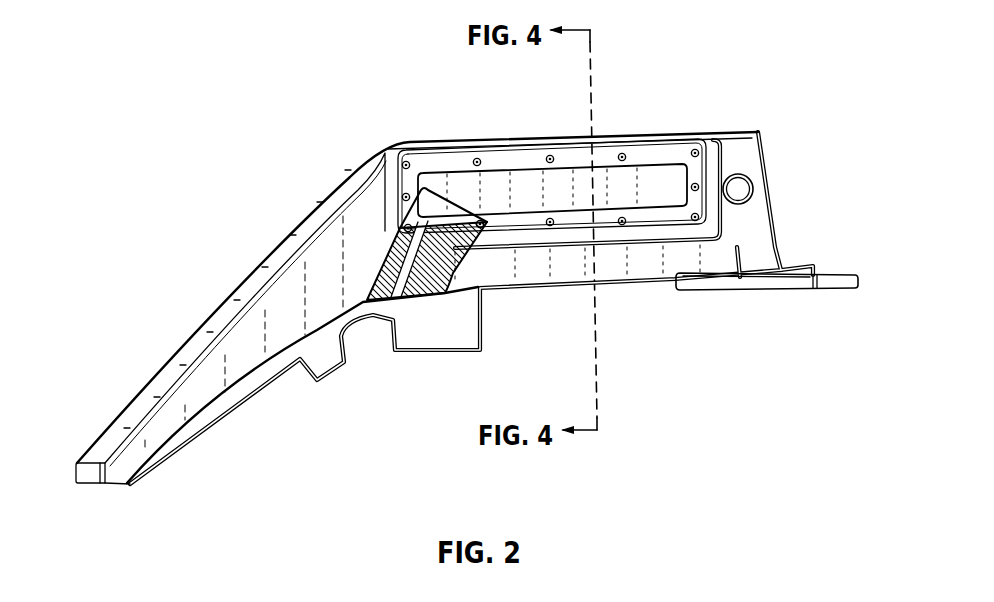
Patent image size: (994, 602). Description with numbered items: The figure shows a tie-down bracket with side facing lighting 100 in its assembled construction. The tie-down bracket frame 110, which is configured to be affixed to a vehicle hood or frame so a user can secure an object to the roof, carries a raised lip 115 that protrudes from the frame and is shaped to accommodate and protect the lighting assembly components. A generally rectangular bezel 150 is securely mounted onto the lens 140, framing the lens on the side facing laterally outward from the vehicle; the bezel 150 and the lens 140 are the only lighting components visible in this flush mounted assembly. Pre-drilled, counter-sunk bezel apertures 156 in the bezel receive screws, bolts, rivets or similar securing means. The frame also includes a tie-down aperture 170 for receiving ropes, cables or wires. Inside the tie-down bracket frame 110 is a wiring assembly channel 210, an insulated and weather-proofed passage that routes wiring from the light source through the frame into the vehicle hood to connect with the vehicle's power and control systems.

The tie-down bracket with side facing lighting 100 is at (790, 60).
The tie-down bracket frame 110 is at (307, 248).
The raised lip 115 is at (623, 140).
The lens 140 is at (630, 195).
The bezel 150 is at (648, 152).
The bezel apertures 156 is at (547, 156).
The tie-down aperture 170 is at (742, 190).
The wiring assembly channel 210 is at (415, 258).